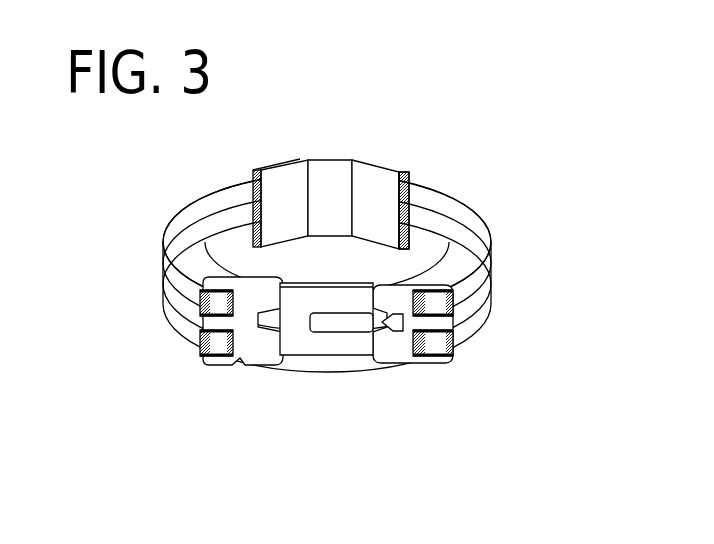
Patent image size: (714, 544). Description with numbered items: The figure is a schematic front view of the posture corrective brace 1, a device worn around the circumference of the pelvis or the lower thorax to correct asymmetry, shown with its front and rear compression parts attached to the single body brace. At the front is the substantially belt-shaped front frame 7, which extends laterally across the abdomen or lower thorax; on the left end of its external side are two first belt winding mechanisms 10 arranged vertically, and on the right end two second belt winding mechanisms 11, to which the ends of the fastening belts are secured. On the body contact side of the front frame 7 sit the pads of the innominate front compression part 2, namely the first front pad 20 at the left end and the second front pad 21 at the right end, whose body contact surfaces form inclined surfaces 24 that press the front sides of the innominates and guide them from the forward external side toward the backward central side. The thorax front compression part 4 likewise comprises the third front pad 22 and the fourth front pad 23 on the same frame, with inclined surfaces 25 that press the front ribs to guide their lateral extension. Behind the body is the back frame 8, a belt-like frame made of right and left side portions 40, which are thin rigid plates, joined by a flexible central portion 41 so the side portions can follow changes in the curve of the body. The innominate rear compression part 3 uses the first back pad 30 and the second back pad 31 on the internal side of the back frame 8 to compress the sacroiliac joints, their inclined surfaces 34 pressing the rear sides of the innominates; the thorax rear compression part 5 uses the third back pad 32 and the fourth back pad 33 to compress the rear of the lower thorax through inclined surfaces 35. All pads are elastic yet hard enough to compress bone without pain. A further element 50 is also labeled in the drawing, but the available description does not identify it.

The posture corrective brace 1 is at (338, 274).
The innominate front compression part 2 is at (335, 304).
The innominate rear compression part 3 is at (351, 262).
The thorax front compression part 4 is at (199, 272).
The thorax rear compression part 5 is at (422, 175).
The front frame 7 is at (354, 366).
The back frame 8 is at (416, 167).
The first belt winding mechanism 10 is at (454, 367).
The second belt winding mechanism 11 is at (217, 375).
The first front pad 20 is at (374, 242).
The second front pad 21 is at (283, 284).
The third front pad 22 is at (483, 253).
The fourth front pad 23 is at (199, 268).
The inclined surface 24 is at (382, 263).
The inclined surface 25 is at (491, 237).
The first back pad 30 is at (378, 188).
The second back pad 31 is at (280, 187).
The third back pad 32 is at (374, 187).
The fourth back pad 33 is at (284, 197).
The inclined surface 34 is at (364, 198).
The inclined surface 35 is at (257, 207).
The side portion 40 is at (364, 188).
The central portion 41 is at (324, 173).
The fastener 50 is at (403, 164).